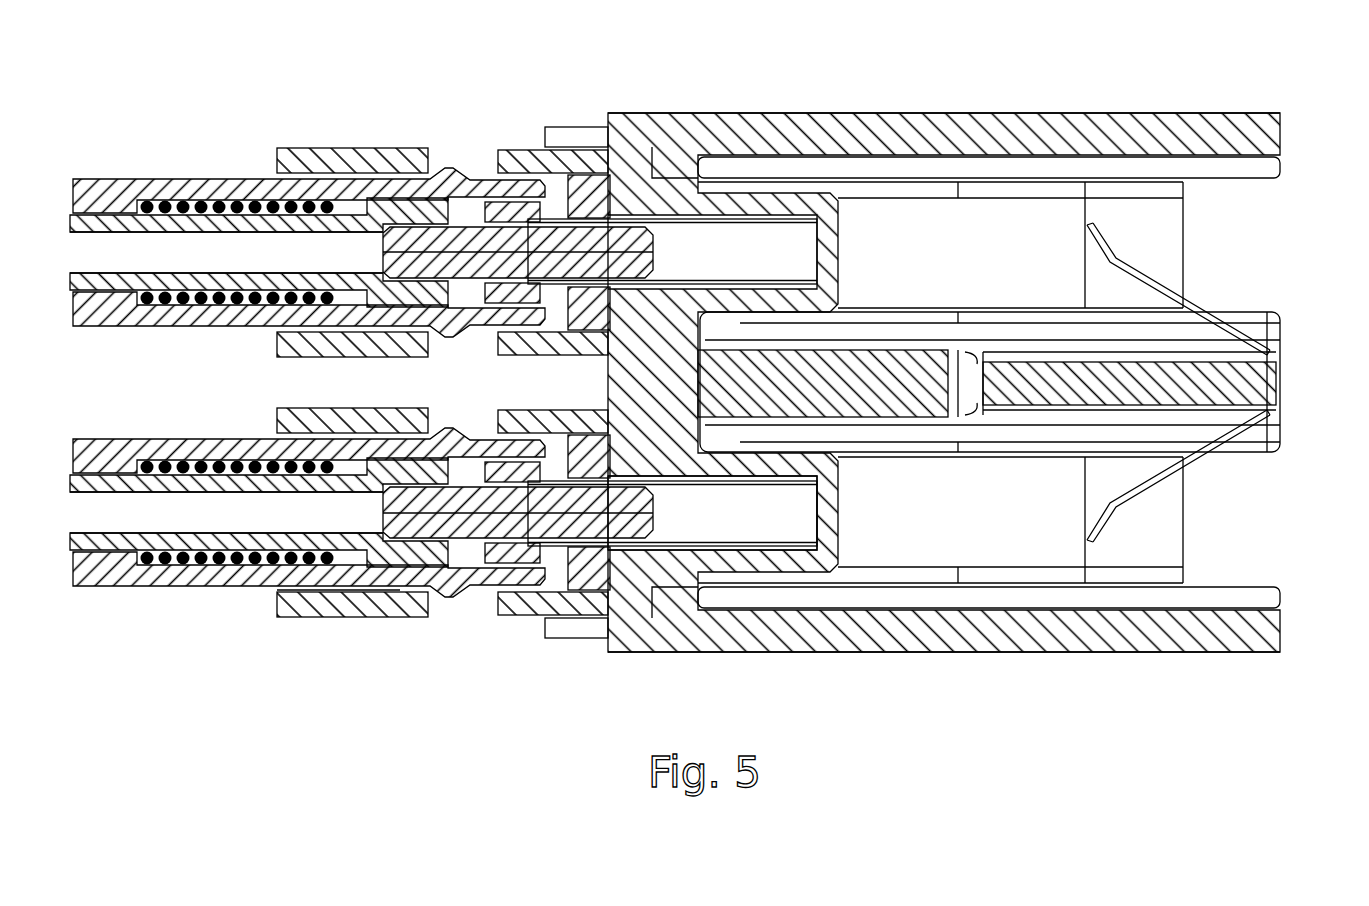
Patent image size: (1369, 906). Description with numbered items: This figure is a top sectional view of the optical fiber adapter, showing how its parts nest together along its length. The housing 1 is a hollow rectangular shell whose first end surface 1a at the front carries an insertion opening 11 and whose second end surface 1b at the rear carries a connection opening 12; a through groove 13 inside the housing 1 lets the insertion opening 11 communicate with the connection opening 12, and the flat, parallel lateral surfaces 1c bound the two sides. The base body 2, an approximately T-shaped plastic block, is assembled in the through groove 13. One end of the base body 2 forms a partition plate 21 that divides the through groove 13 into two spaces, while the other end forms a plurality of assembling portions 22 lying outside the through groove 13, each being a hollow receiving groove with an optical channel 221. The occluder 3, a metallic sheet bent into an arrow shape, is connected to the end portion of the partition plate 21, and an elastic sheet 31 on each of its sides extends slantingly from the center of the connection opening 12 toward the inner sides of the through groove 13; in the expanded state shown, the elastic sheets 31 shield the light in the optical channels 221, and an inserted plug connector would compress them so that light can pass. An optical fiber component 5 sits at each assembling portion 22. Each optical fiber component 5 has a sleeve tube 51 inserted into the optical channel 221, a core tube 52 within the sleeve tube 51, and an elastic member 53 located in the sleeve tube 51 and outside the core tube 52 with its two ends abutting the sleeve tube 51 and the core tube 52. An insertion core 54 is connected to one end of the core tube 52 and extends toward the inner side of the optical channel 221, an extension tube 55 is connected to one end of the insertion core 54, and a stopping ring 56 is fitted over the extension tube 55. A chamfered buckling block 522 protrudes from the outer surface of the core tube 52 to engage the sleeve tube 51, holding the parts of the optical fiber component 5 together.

The housing 1 is at (845, 118).
The first end surface 1a is at (605, 137).
The second end surface 1b is at (1278, 655).
The lateral surfaces 1c is at (895, 118).
The base body 2 is at (672, 197).
The occluder 3 is at (1280, 378).
The optical fiber component 5 is at (113, 588).
The insertion opening 11 is at (610, 618).
The connection opening 12 is at (1280, 168).
The through groove 13 is at (953, 217).
The partition plate 21 is at (1200, 390).
The assembling portion 22 is at (335, 617).
The elastic sheet 31 is at (1170, 288).
The sleeve tube 51 is at (185, 187).
The core tube 52 is at (210, 290).
The elastic member 53 is at (222, 205).
The insertion core 54 is at (470, 525).
The extension tube 55 is at (678, 545).
The stopping ring 56 is at (533, 210).
The optical channel 221 is at (272, 590).
The buckling block 522 is at (350, 207).